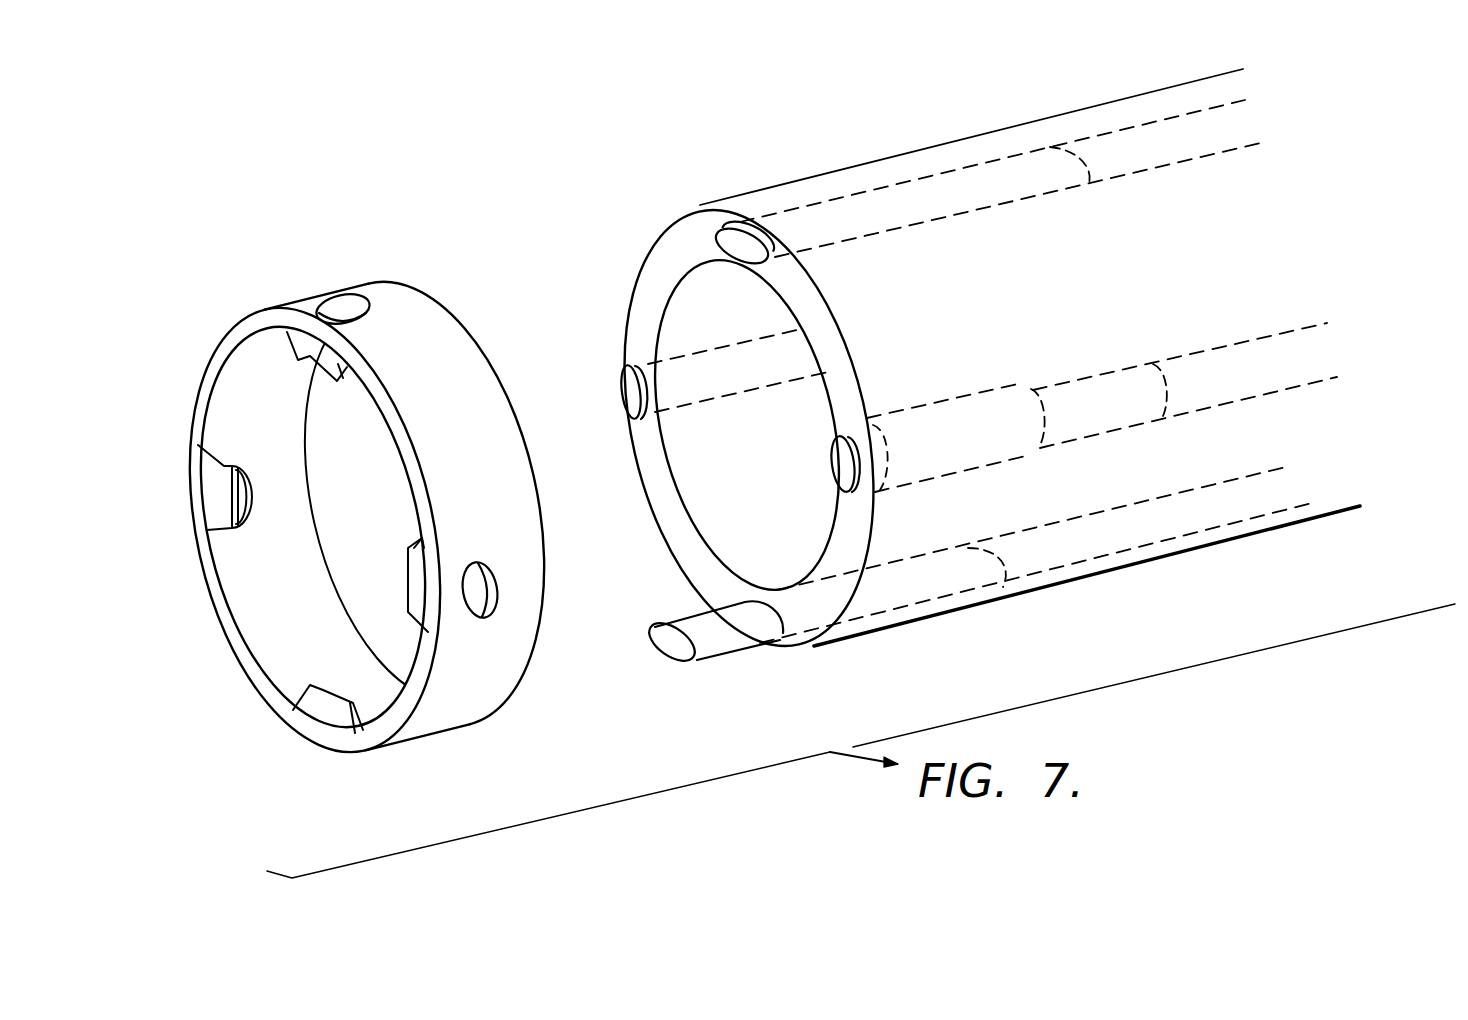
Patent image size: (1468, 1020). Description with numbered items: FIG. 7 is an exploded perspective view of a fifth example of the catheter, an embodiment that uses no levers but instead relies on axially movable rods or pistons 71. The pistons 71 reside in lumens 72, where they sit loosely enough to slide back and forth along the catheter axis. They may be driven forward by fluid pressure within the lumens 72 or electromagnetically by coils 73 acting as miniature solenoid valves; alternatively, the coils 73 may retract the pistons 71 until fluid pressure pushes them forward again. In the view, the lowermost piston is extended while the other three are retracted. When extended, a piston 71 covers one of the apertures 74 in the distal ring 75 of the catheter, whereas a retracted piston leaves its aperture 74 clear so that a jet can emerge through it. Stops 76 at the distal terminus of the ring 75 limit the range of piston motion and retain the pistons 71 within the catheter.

The pistons 71 is at (733, 228).
The lumens 72 is at (1186, 163).
The coils 73 is at (991, 386).
The apertures 74 is at (338, 296).
The distal ring 75 is at (292, 302).
The stops 76 is at (300, 356).